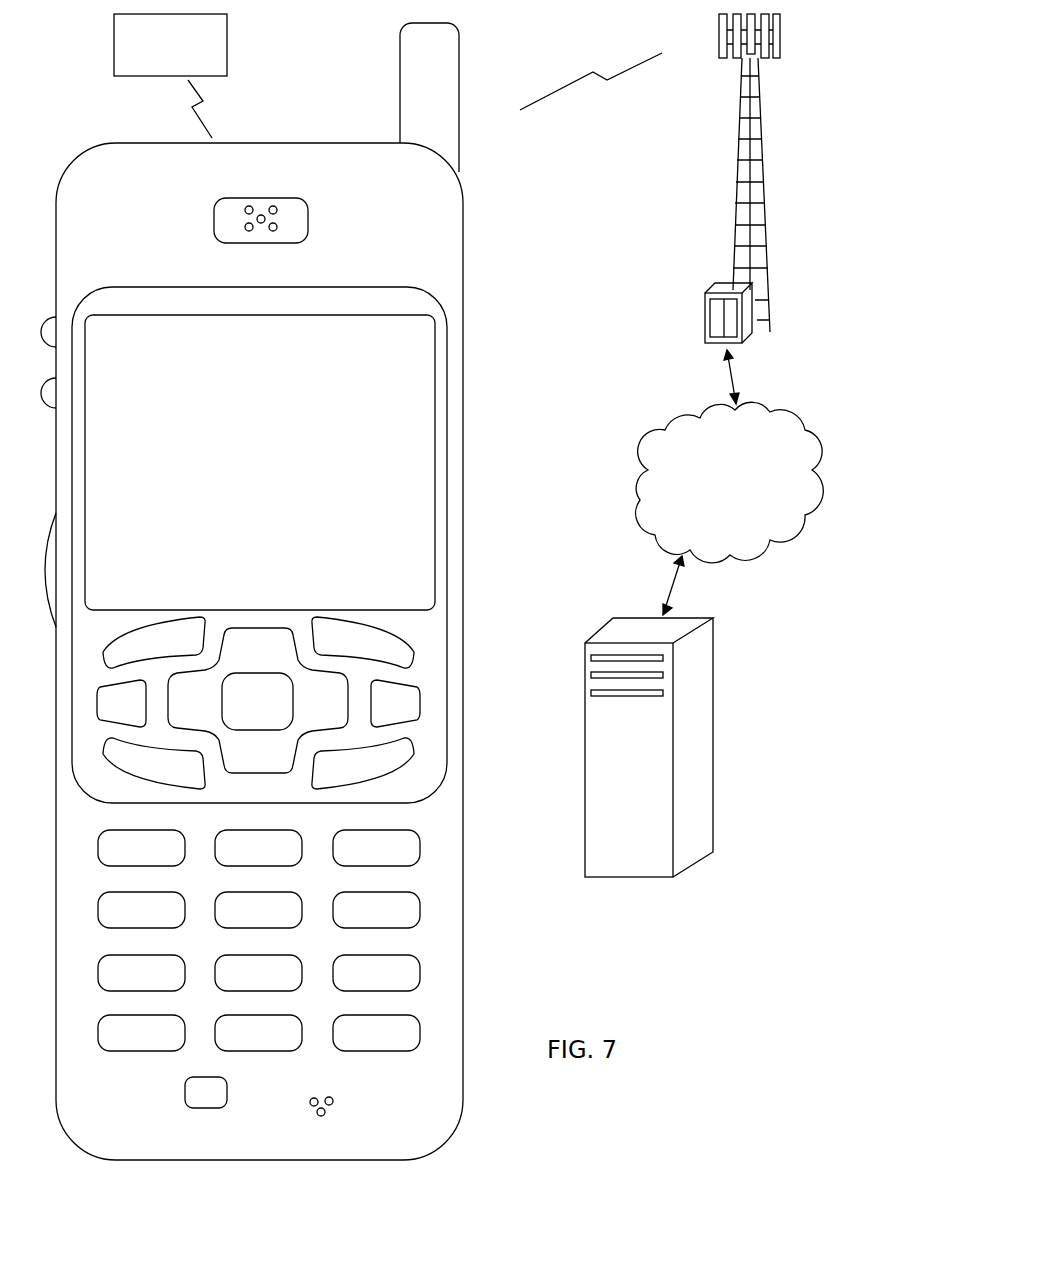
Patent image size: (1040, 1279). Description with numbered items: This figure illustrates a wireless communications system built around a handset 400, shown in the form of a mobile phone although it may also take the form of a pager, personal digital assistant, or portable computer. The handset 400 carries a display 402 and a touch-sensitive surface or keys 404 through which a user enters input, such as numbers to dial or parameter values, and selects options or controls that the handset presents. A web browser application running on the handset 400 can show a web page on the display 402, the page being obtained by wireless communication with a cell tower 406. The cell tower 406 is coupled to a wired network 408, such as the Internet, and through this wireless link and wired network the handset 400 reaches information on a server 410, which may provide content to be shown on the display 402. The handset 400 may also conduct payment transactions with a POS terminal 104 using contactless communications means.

The POS terminal 104 is at (227, 48).
The handset 400 is at (108, 1157).
The display 402 is at (437, 328).
The keys 404 is at (470, 1010).
The cell tower 406 is at (736, 194).
The wired network 408 is at (646, 532).
The server 410 is at (633, 877).